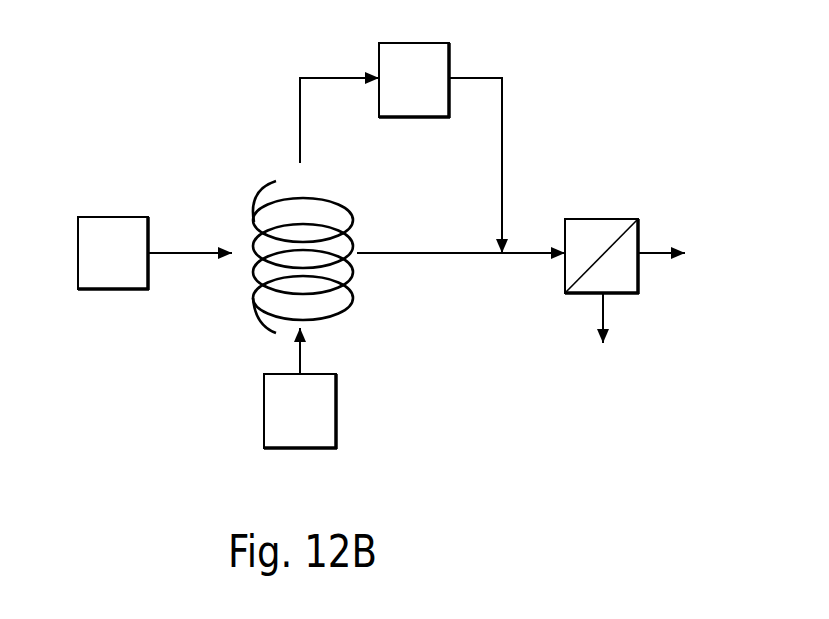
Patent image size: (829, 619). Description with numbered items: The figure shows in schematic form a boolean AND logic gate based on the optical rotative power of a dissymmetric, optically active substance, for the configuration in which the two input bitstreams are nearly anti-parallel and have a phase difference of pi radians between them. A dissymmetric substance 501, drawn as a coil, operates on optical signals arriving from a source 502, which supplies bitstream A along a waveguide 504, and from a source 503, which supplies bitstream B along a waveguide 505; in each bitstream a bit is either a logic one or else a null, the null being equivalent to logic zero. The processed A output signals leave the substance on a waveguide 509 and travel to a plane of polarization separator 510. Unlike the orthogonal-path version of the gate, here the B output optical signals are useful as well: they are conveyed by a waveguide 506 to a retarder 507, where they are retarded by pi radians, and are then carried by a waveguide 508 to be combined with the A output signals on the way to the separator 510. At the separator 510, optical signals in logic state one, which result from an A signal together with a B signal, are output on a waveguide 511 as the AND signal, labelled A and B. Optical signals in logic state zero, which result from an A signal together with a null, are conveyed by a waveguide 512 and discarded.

The optical fiber coil / nonlinear fiber loop 501 is at (262, 186).
The input A source 502 is at (77, 227).
The input B source 503 is at (264, 415).
The input A signal path 504 is at (230, 247).
The input B signal path 505 is at (300, 362).
The coupled branch line 506 is at (300, 96).
The pi phase shifter 507 is at (449, 52).
The phase-shifted branch line 508 is at (502, 135).
The coil output line 509 is at (377, 252).
The polarization beam splitter 510 is at (585, 218).
The AND output (A•B) 511 is at (672, 248).
The rejected output 512 is at (603, 300).